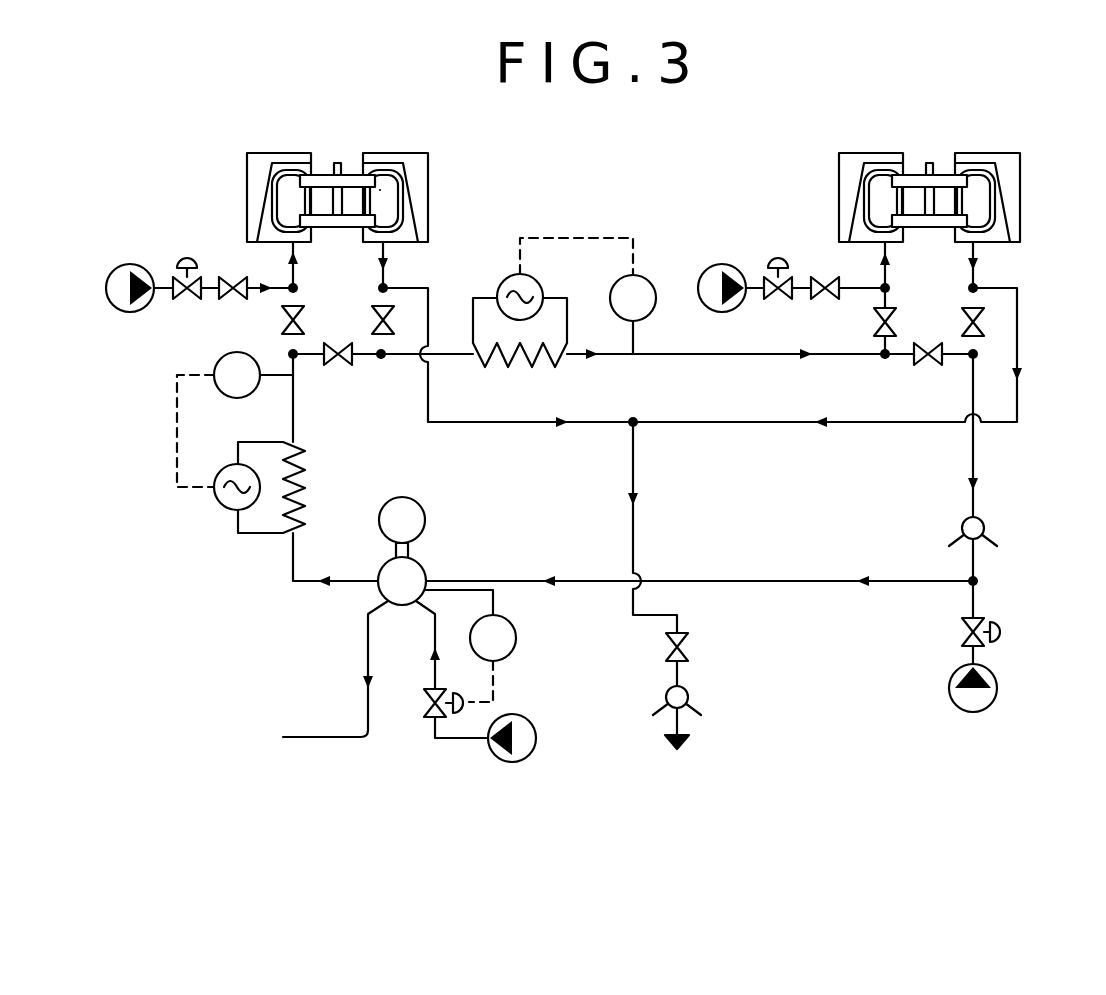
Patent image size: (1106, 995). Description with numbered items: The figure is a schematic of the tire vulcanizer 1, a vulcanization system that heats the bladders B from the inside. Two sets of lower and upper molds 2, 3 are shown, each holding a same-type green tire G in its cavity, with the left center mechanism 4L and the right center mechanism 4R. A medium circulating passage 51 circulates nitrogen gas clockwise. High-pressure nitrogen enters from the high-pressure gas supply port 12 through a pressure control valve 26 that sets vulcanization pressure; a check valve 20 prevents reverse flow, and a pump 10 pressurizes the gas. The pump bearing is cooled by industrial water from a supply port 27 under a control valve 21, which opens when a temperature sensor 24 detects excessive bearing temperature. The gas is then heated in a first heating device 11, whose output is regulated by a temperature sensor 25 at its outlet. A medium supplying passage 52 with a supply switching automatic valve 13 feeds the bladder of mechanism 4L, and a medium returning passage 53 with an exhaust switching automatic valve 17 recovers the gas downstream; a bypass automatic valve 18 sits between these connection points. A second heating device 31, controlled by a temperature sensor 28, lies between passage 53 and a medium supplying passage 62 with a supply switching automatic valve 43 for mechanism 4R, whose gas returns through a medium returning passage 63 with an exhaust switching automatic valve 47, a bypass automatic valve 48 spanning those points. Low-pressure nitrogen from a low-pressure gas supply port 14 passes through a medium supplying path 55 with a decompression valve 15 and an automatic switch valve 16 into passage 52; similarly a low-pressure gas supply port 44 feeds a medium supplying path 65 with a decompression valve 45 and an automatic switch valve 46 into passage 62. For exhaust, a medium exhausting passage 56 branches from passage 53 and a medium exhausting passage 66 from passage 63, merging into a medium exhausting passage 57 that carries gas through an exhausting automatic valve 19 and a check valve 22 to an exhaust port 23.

The tire vulcanizer 1 is at (582, 195).
The lower mold 2 is at (285, 172).
The upper mold 3 is at (285, 172).
The center mechanism 4L is at (338, 163).
The center mechanism 4R is at (930, 163).
The bladder B is at (378, 190).
The green tire G is at (275, 195).
The pump 10 is at (380, 571).
The first heating device 11 is at (255, 533).
The high-pressure gas supply port 12 is at (950, 690).
The supply switching automatic valve 13 is at (283, 322).
The low-pressure gas supply port 14 is at (130, 265).
The decompression valve 15 is at (165, 290).
The automatic switch valve 16 is at (225, 292).
The exhaust switching automatic valve 17 is at (372, 311).
The bypass automatic valve 18 is at (340, 366).
The exhausting automatic valve 19 is at (689, 643).
The check valve 20 is at (955, 528).
The control valve 21 is at (430, 693).
The check valve 22 is at (660, 695).
The exhaust port 23 is at (665, 748).
The temperature sensor 24 is at (514, 628).
The temperature sensor 25 is at (225, 395).
The pressure control valve 26 is at (1003, 632).
The supply port 27 is at (500, 760).
The temperature sensor 28 is at (650, 280).
The second heating device 31 is at (495, 298).
The supply switching automatic valve 43 is at (873, 322).
The low-pressure gas supply port 44 is at (732, 310).
The decompression valve 45 is at (778, 258).
The automatic switch valve 46 is at (826, 278).
The exhaust switching automatic valve 47 is at (977, 335).
The bypass automatic valve 48 is at (928, 368).
The medium circulating passage 51 is at (680, 357).
The medium supplying passage 52 is at (290, 272).
The medium returning passage 53 is at (388, 255).
The medium supplying path 55 is at (180, 280).
The medium exhausting passage 56 is at (520, 425).
The medium exhausting passage 57 is at (636, 465).
The medium supplying passage 62 is at (888, 255).
The medium returning passage 63 is at (978, 255).
The medium supplying path 65 is at (738, 268).
The medium exhausting passage 66 is at (772, 425).